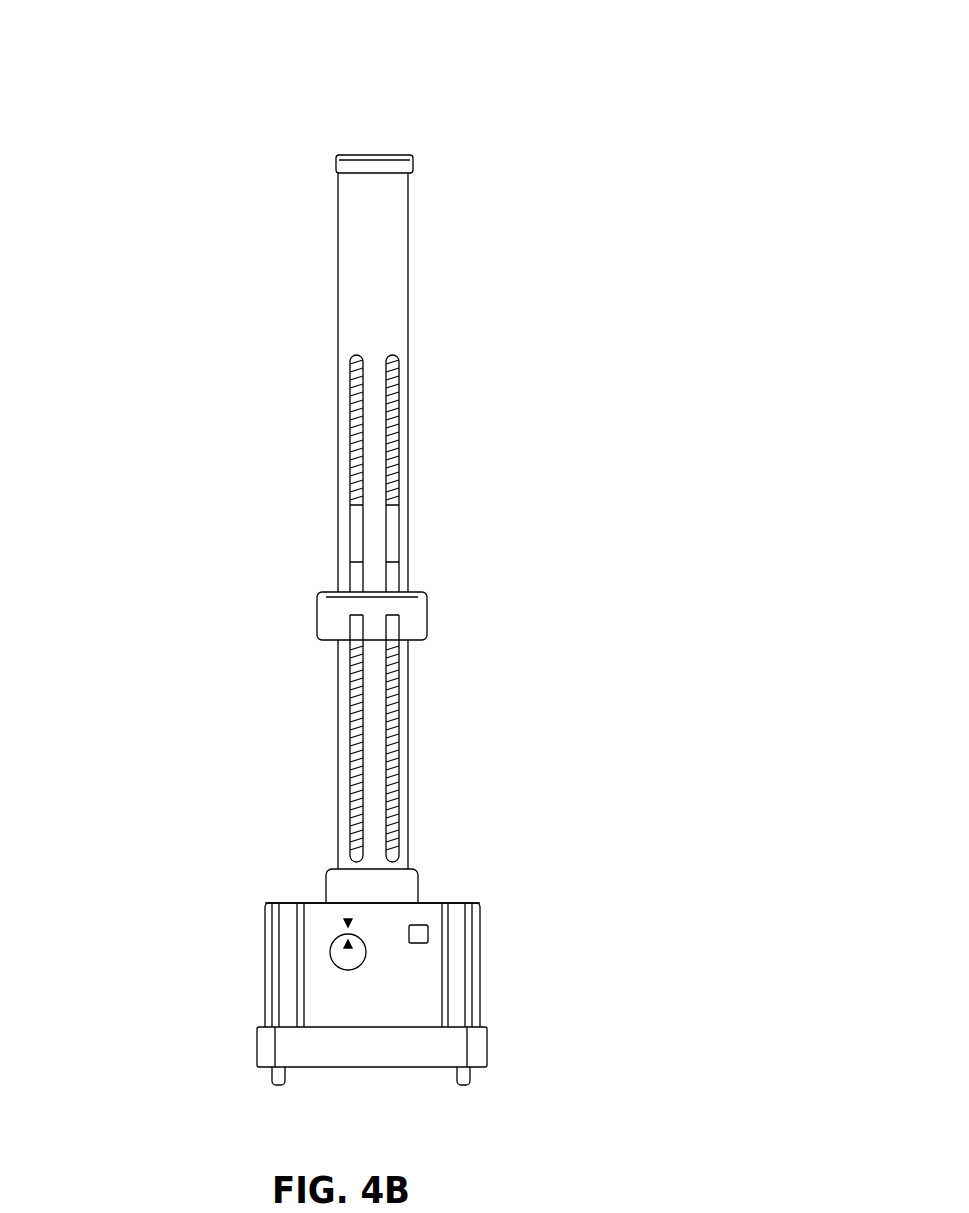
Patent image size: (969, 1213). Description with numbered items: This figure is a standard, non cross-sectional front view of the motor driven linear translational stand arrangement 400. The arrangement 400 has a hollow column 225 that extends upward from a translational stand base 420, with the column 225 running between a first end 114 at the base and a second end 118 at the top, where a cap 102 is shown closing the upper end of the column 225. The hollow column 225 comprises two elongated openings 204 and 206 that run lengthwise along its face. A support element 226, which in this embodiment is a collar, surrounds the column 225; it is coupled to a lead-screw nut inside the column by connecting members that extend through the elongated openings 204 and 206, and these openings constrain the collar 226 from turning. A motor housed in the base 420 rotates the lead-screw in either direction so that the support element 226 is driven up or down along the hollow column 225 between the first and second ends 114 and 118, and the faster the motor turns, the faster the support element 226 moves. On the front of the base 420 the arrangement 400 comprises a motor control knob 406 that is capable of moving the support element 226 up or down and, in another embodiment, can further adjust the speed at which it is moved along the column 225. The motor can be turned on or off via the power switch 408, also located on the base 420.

The linear translational stand arrangement 400 is at (100, 88).
The second end 118 is at (468, 160).
The cap 102 is at (363, 155).
The hollow column 225 is at (408, 307).
The elongated opening 206 is at (355, 532).
The elongated opening 204 is at (395, 532).
The support element 226 is at (427, 620).
The first end 114 is at (300, 876).
The translational stand base 420 is at (453, 903).
The motor control knob 406 is at (352, 968).
The power switch 408 is at (422, 943).